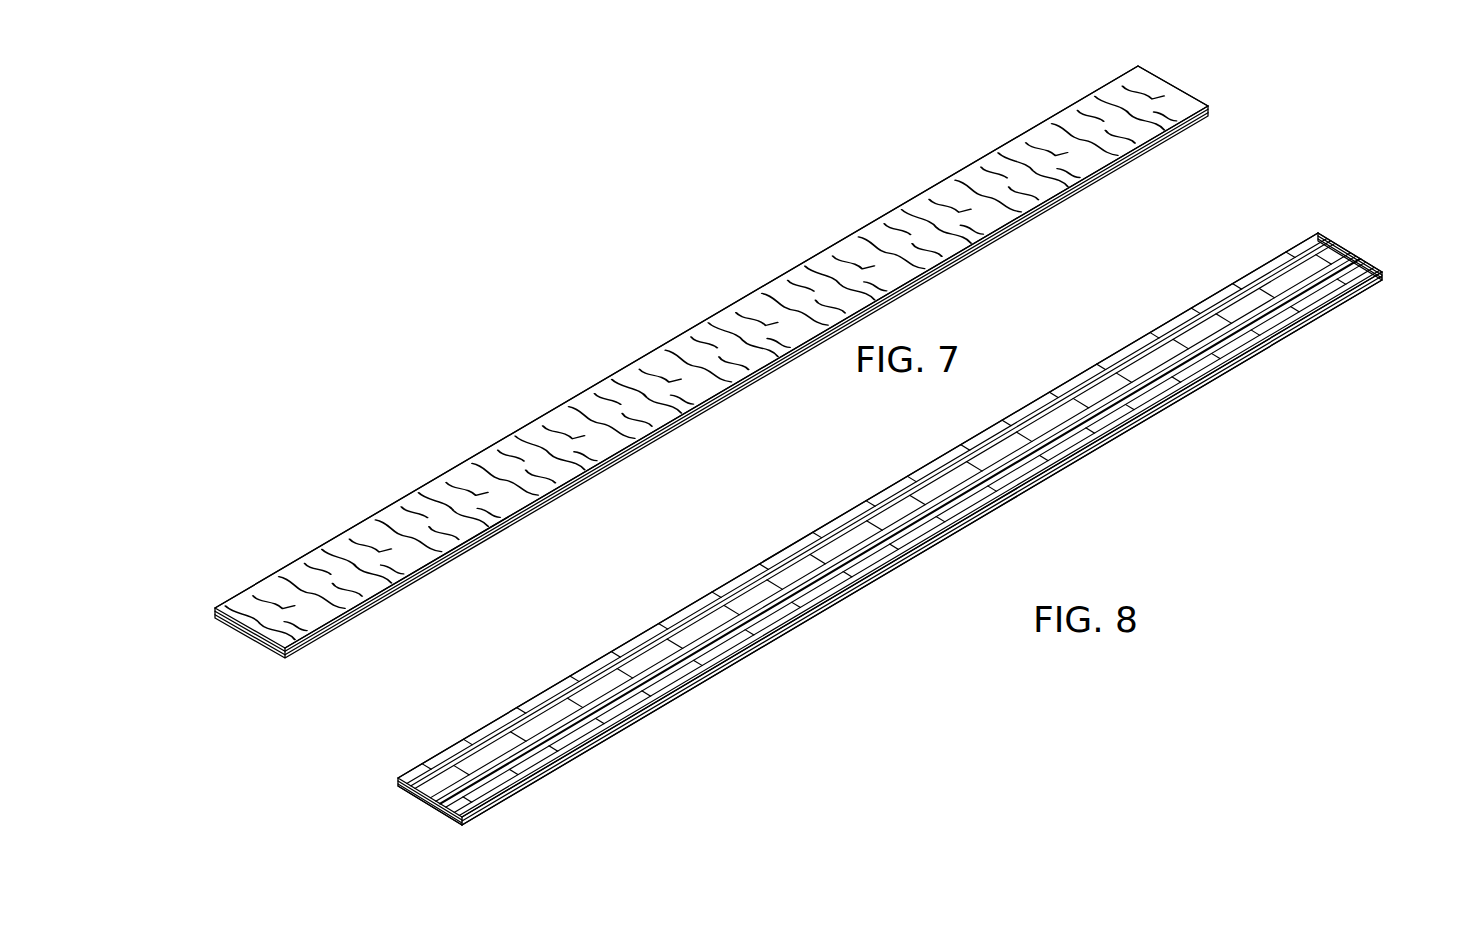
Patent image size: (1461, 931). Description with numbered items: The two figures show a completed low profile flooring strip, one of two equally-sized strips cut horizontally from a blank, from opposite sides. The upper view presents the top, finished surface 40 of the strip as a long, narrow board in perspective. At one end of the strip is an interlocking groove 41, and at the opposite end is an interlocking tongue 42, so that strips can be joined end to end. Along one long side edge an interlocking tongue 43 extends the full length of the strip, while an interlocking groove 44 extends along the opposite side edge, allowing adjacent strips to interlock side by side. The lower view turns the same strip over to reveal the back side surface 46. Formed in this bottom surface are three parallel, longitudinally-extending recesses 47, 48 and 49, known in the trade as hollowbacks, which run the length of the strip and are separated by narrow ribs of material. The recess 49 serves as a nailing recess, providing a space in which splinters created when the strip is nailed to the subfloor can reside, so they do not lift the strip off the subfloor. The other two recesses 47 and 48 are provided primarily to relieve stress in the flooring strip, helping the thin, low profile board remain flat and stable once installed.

In FIG. 7, the top finished surface 40 is at (838, 253).
In FIG. 7, the interlocking groove 41 is at (236, 630).
In FIG. 8, the interlocking groove 41 is at (422, 797).
In FIG. 7, the interlocking tongue 42 is at (1208, 106).
In FIG. 8, the interlocking tongue 42 is at (1382, 272).
In FIG. 7, the interlocking tongue 43 is at (410, 493).
In FIG. 8, the interlocking tongue 43 is at (557, 768).
In FIG. 7, the interlocking groove 44 is at (465, 548).
In FIG. 8, the interlocking groove 44 is at (398, 778).
In FIG. 8, the back side surface 46 is at (1032, 470).
In FIG. 8, the recess 47 is at (693, 603).
In FIG. 8, the recess 48 is at (1205, 357).
In FIG. 8, the nailing recess 49 is at (752, 633).